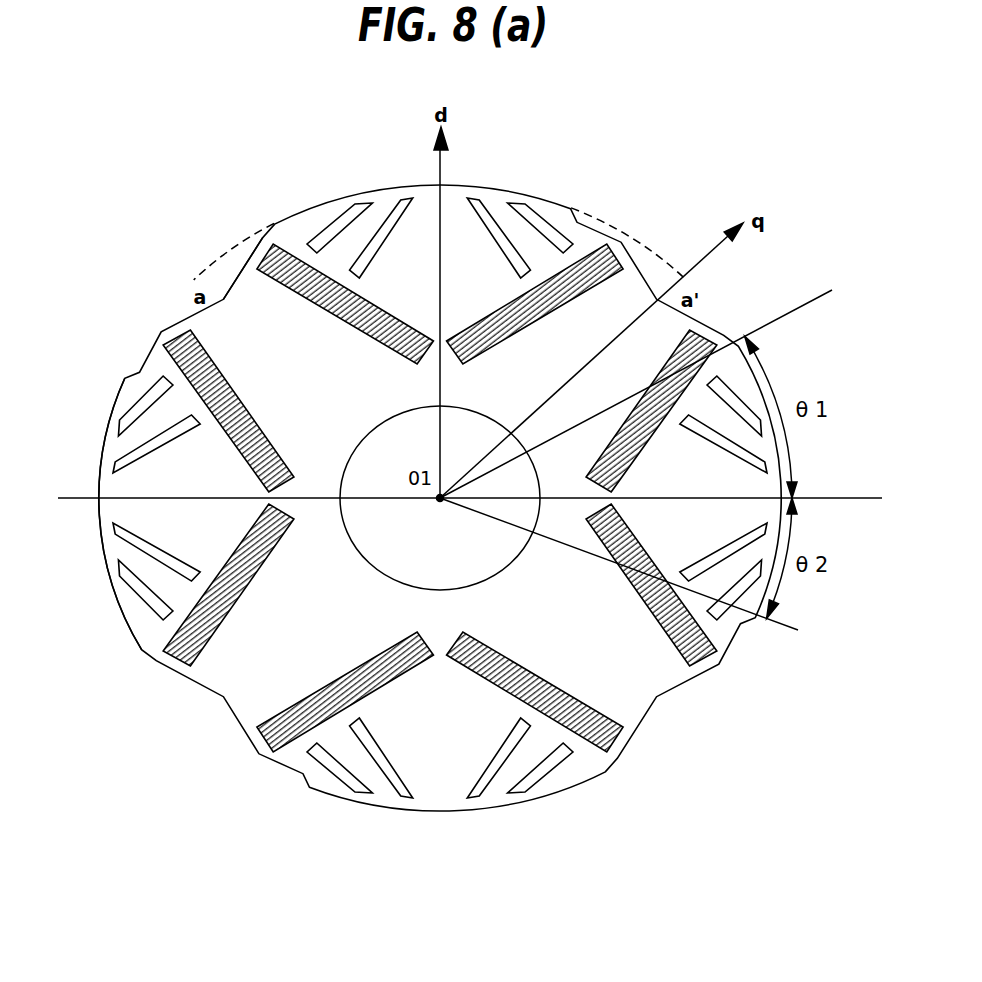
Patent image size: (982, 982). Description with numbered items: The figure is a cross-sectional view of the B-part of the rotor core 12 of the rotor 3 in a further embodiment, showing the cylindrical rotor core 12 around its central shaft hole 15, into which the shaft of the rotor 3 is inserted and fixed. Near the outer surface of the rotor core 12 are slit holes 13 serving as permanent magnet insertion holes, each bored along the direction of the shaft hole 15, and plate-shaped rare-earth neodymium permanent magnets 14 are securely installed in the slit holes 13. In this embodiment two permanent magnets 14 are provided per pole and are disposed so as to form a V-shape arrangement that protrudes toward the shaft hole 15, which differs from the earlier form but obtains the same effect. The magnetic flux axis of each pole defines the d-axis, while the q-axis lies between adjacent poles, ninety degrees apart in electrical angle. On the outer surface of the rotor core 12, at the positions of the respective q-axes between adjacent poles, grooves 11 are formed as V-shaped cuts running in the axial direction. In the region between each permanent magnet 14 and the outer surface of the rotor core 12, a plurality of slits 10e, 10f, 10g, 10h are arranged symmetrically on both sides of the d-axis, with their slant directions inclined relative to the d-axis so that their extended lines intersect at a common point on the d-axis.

The rotor 3 is at (596, 224).
The slit 10e is at (340, 224).
The slit 10f is at (535, 225).
The slit 10g is at (404, 203).
The slit 10h is at (485, 215).
The groove 11 is at (185, 313).
The rotor core 12 is at (105, 432).
The slit hole 13 is at (322, 318).
The permanent magnet 14 is at (270, 258).
The shaft hole 15 is at (362, 452).